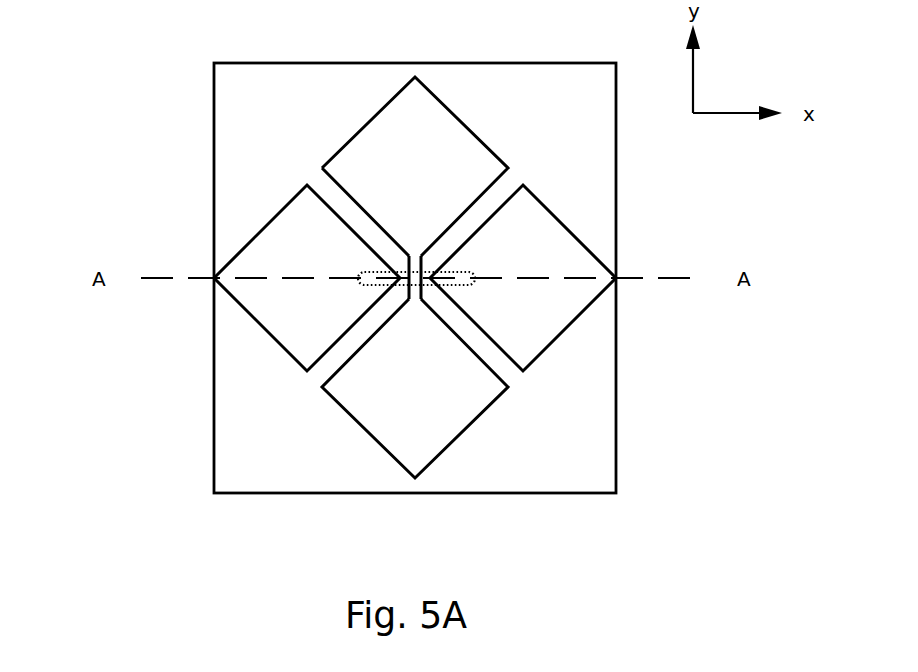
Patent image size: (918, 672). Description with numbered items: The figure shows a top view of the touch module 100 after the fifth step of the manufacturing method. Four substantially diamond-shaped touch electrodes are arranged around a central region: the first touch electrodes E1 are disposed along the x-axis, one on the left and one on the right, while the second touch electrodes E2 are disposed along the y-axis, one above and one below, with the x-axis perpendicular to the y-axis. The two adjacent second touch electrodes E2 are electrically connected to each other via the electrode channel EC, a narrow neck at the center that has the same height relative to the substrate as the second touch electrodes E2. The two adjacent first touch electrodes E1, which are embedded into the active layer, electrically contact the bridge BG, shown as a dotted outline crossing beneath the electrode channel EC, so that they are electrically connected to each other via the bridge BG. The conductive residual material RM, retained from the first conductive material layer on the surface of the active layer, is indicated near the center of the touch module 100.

The touch module 100 is at (84, 39).
The first touch electrode E1 is at (530, 207).
The second touch electrode E2 is at (398, 132).
The conductive residual material RM is at (413, 283).
The bridge BG is at (353, 278).
The electrode channel EC is at (413, 288).